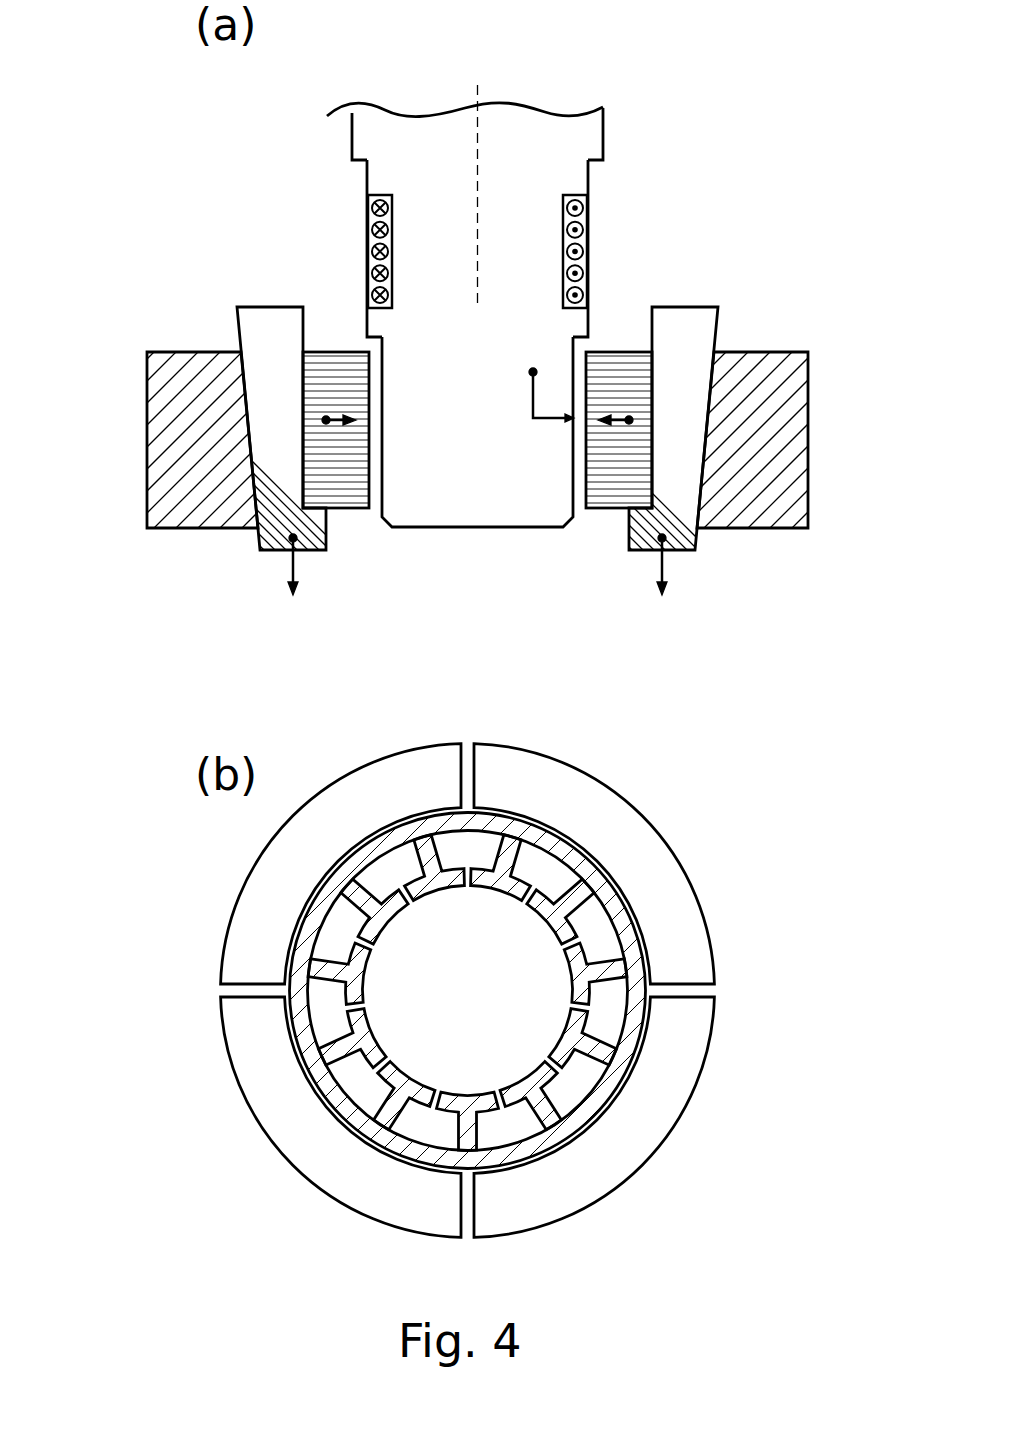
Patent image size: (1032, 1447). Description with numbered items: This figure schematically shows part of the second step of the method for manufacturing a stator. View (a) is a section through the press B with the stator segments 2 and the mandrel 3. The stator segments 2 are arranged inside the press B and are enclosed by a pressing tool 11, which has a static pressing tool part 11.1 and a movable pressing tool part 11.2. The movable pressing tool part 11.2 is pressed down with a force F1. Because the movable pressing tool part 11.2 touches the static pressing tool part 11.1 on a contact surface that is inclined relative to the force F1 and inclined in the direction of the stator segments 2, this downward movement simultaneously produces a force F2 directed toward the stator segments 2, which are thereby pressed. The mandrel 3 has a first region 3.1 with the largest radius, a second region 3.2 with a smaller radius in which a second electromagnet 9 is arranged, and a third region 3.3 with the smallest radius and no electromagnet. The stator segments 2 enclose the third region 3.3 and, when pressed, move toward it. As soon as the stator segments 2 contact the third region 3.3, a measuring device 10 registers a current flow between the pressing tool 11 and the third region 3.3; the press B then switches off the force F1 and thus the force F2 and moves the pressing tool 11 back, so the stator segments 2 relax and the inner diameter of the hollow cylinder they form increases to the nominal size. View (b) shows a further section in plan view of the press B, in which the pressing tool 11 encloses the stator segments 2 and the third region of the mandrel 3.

The stator segments 2 is at (344, 362).
The mandrel 3 is at (523, 605).
The first region of the mandrel 3.1 is at (598, 132).
The second region of the mandrel 3.2 is at (575, 178).
The third region of the mandrel 3.3 is at (560, 357).
The second electromagnet 9 is at (577, 217).
The measuring device 10 is at (533, 375).
The pressing tool 11 is at (516, 740).
The static pressing tool part 11.1 is at (158, 458).
The movable pressing tool part 11.2 is at (277, 328).
The press B is at (715, 258).
The axial force F1 is at (733, 605).
The axial force in the direction of the stator segments F2 is at (333, 428).